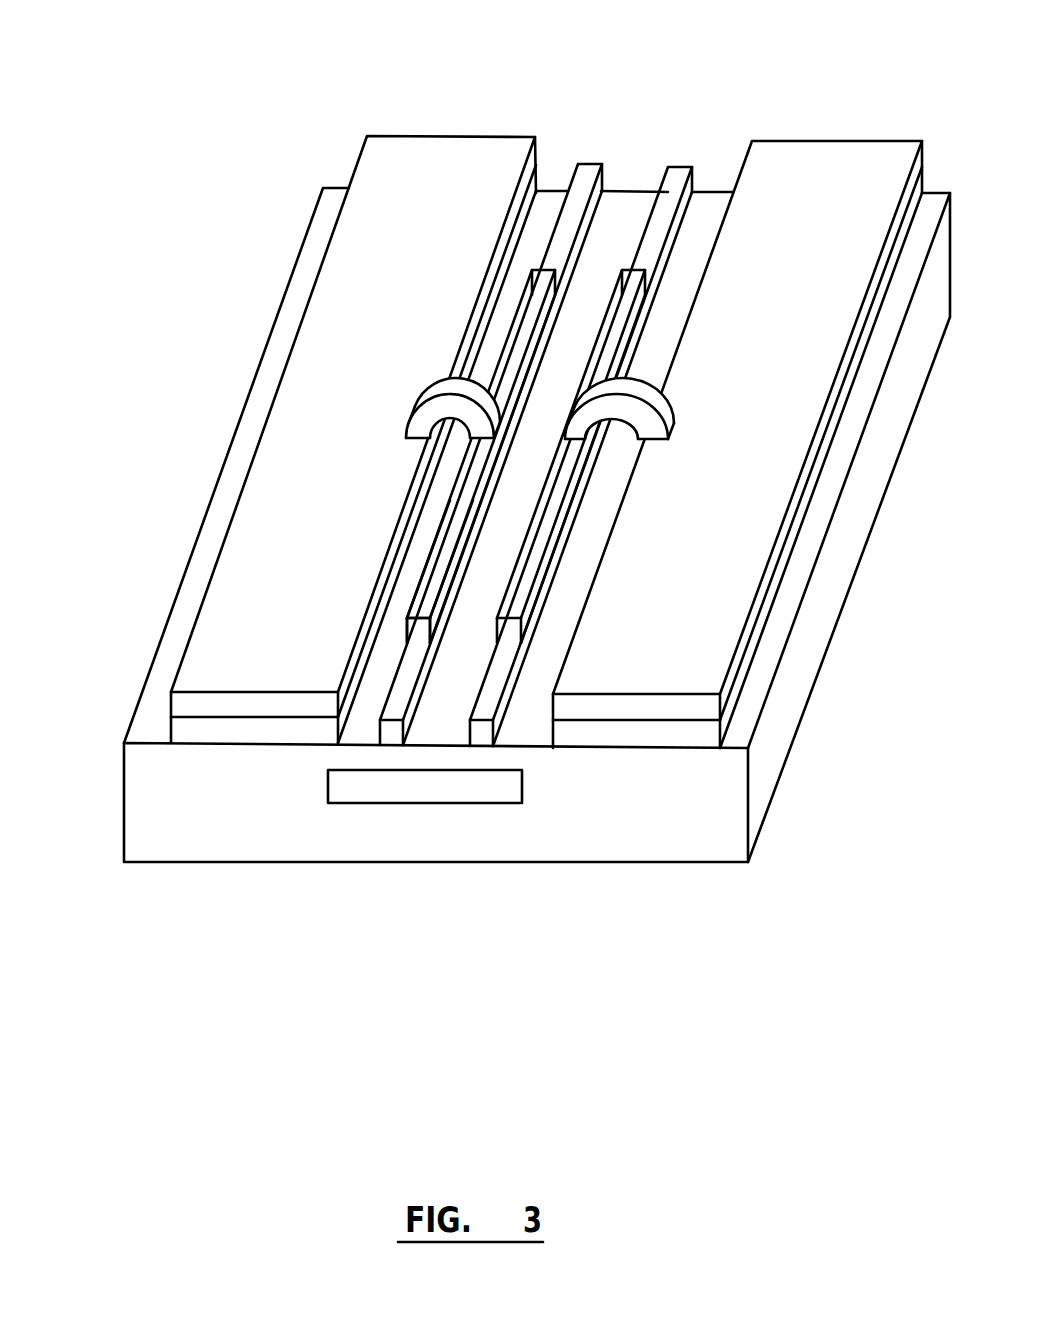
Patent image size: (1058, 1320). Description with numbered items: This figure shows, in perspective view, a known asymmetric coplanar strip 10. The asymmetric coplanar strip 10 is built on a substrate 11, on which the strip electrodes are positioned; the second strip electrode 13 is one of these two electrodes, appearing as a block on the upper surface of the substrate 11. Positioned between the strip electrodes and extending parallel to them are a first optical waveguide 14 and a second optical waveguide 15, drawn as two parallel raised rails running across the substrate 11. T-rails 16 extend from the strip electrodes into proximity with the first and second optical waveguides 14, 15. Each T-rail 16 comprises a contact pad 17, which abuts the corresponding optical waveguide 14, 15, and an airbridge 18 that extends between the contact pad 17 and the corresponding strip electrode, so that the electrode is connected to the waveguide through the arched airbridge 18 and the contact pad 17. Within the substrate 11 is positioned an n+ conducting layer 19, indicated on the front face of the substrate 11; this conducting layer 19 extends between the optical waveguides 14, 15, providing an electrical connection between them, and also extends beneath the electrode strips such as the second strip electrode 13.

The asymmetric coplanar strip 10 is at (503, 555).
The substrate 11 is at (200, 833).
The second strip electrode 13 is at (806, 230).
The first optical waveguide 14 is at (392, 735).
The second optical waveguide 15 is at (486, 735).
The T-rail 16 is at (552, 268).
The contact pad 17 is at (428, 594).
The airbridge 18 is at (435, 388).
The n+ conducting layer 19 is at (428, 787).